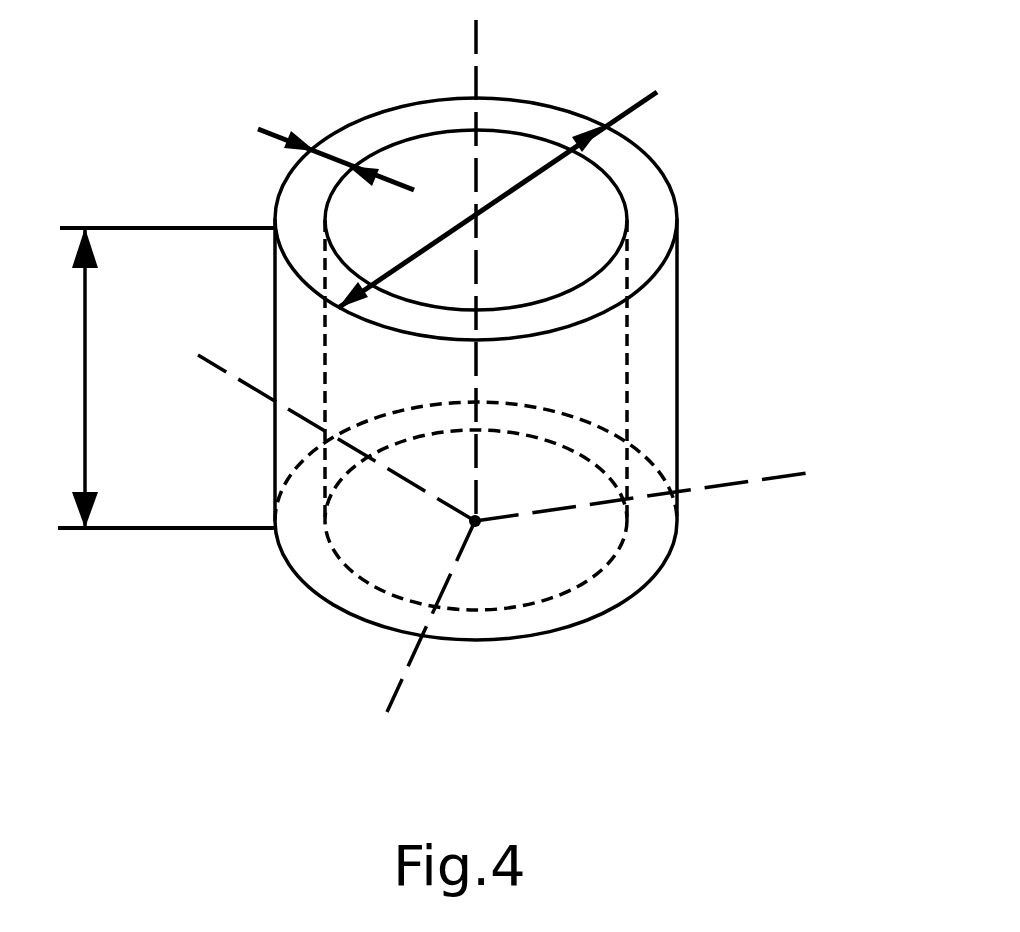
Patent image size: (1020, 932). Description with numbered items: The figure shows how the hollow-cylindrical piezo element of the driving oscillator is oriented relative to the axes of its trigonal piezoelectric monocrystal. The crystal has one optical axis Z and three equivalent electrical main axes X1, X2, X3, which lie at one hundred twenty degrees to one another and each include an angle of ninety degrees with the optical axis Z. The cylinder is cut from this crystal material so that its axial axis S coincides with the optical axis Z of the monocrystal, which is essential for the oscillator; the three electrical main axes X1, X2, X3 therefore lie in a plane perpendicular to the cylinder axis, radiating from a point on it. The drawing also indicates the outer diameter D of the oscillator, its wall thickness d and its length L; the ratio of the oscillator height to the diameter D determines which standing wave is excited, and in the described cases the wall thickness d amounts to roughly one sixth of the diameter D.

The axial axis S is at (476, 320).
The optical axis Z is at (449, 260).
The diameter D is at (497, 176).
The wall thickness d is at (336, 133).
The length L is at (159, 378).
The first electrical main axis X1 is at (390, 620).
The second electrical main axis X2 is at (306, 402).
The third electrical main axis X3 is at (687, 487).